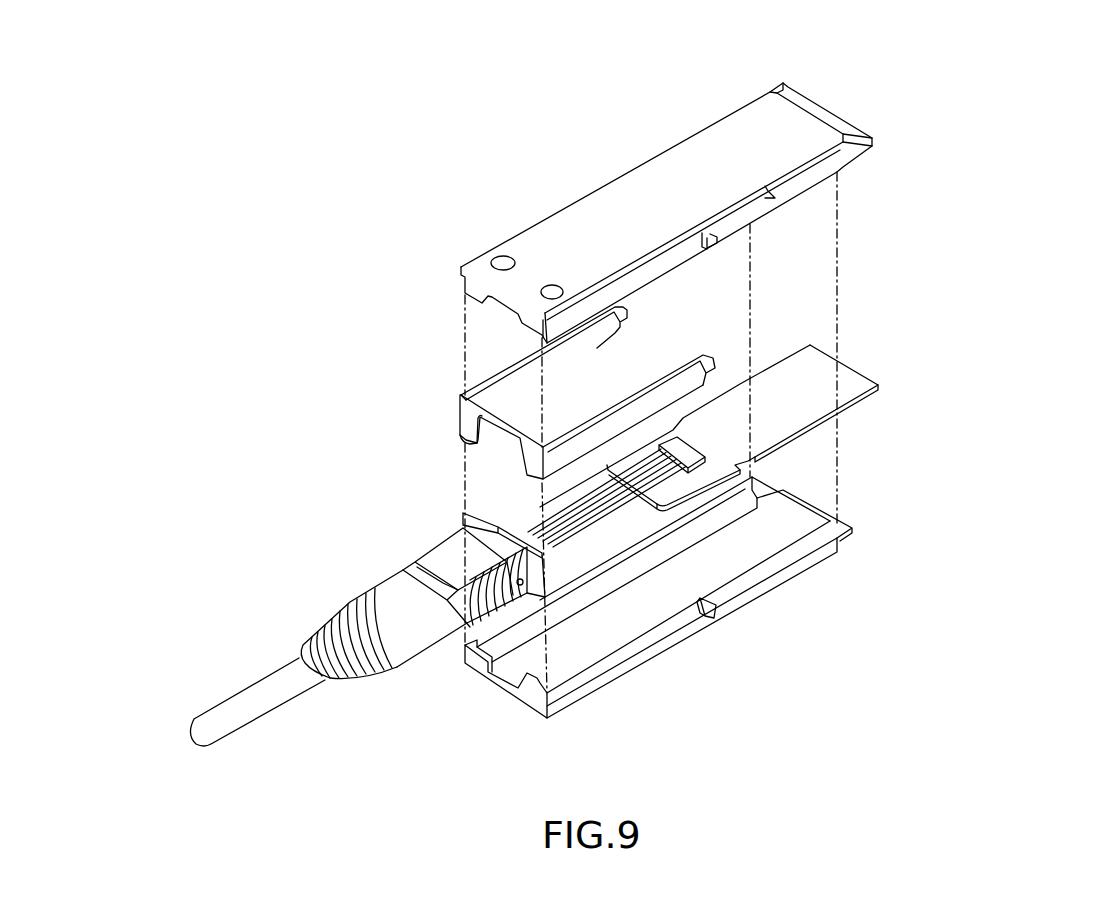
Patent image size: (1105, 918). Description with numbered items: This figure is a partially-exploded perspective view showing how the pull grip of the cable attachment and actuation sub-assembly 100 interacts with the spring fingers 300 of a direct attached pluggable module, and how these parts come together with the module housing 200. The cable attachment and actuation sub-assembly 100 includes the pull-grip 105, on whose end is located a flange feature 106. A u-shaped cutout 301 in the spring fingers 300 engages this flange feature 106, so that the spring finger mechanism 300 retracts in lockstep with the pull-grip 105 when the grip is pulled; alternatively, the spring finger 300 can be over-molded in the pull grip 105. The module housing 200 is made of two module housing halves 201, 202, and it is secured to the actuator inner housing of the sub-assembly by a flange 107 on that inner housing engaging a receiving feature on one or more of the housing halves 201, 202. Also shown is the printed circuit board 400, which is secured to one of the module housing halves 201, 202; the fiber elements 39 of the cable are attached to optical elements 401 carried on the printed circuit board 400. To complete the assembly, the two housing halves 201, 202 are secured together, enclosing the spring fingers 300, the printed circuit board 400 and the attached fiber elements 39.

The cable attachment and actuation sub-assembly 100 is at (278, 553).
The pull-grip 105 is at (443, 553).
The flange feature 106 is at (467, 515).
The flange 107 is at (500, 530).
The module housing 200 is at (900, 520).
The module housing half 201 is at (817, 115).
The module housing half 202 is at (798, 558).
The spring fingers 300 is at (460, 395).
The u-shaped cutout 301 is at (467, 433).
The printed circuit board 400 is at (857, 382).
The optical elements 401 is at (690, 450).
The fiber elements 39 is at (607, 510).